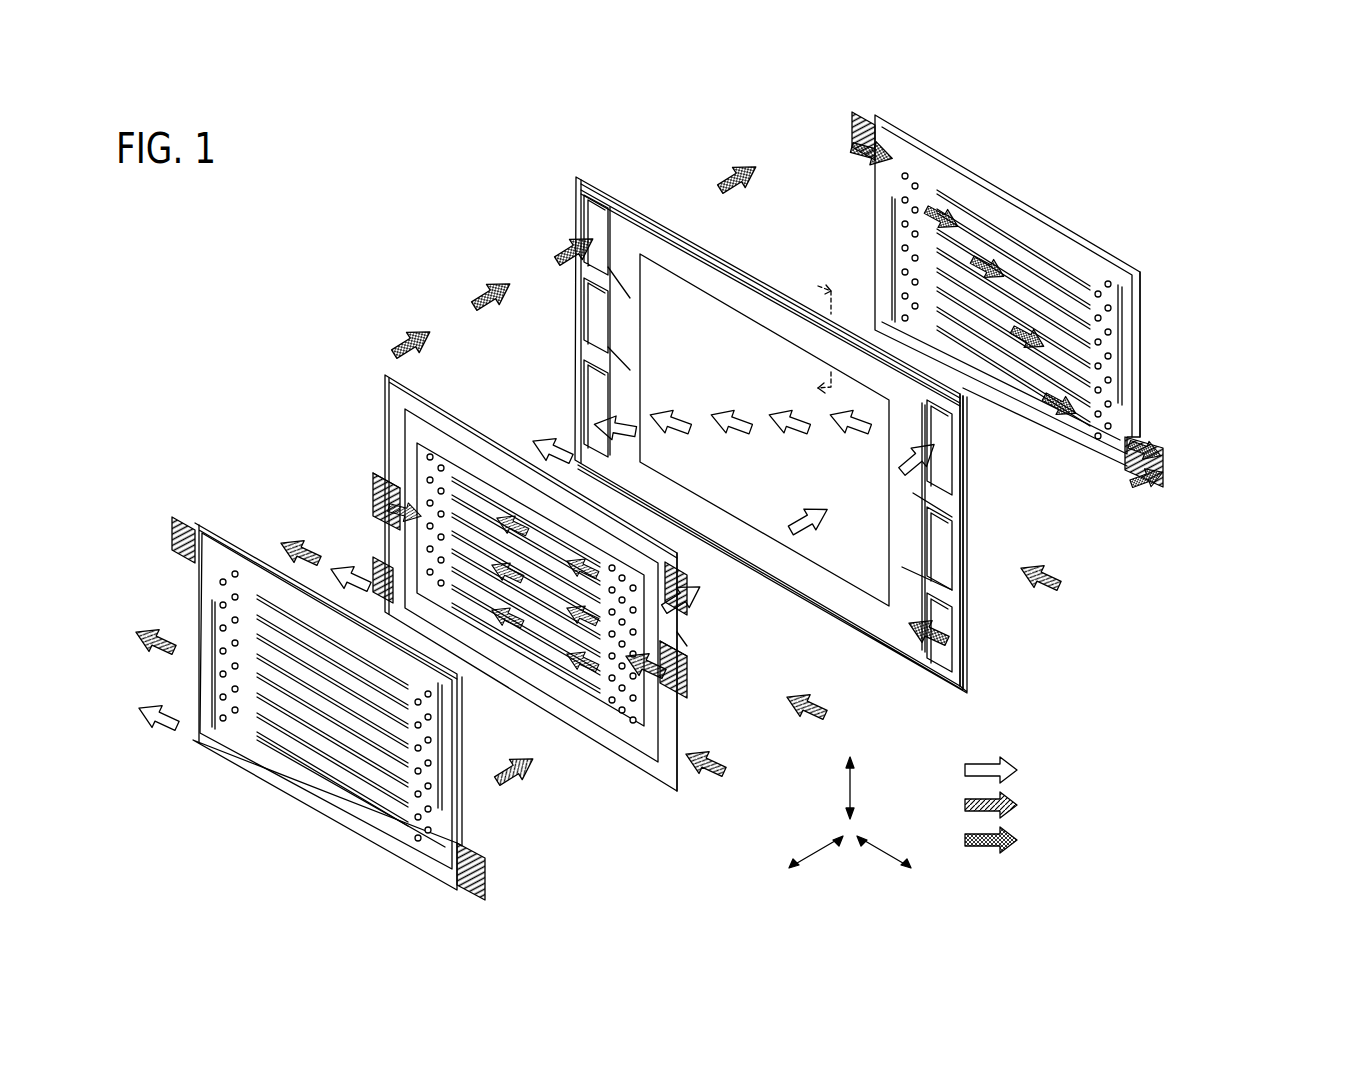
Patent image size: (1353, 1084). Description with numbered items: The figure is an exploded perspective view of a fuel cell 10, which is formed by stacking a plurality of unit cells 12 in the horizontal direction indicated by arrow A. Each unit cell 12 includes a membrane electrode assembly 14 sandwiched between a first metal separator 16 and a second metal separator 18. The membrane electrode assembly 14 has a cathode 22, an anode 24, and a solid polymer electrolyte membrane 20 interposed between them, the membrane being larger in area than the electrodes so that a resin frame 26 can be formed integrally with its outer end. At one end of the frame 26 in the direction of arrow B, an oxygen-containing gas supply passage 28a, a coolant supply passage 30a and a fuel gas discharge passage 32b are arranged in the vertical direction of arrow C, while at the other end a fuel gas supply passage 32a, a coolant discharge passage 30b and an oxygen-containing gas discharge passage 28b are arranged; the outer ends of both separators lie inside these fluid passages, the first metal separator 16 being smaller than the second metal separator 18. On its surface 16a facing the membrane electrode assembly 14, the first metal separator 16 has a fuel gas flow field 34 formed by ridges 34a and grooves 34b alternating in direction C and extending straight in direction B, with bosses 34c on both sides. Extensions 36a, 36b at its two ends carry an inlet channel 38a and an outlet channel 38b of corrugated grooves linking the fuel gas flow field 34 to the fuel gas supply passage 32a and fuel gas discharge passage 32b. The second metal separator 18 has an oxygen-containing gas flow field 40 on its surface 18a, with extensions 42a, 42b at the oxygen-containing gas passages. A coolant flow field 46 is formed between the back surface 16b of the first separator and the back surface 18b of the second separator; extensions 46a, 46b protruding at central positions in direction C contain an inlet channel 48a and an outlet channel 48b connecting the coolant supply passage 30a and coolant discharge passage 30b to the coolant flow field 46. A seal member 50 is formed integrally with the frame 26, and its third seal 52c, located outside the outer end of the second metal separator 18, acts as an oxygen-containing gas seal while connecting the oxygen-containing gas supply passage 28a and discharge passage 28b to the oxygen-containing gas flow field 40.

The fuel cell 10 is at (707, 506).
The unit cell 12 is at (192, 291).
The membrane electrode assembly 14 is at (768, 407).
The first metal separator 16 is at (188, 520).
The surface of first metal separator 16a is at (1100, 456).
The surface of first metal separator 16b is at (1131, 476).
The second metal separator 18 is at (525, 575).
The surface of second metal separator 18a is at (658, 775).
The surface of second metal separator 18b is at (640, 770).
The solid polymer electrolyte membrane 20 is at (968, 521).
The cathode 22 is at (764, 436).
The anode 24 is at (752, 328).
The resin frame 26 is at (982, 484).
The oxygen-containing gas supply passage 28a is at (950, 440).
The oxygen-containing gas discharge passage 28b is at (598, 378).
The coolant supply passage 30a is at (950, 540).
The coolant discharge passage 30b is at (596, 302).
The fuel gas supply passage 32a is at (592, 216).
The fuel gas discharge passage 32b is at (950, 622).
The fuel gas flow field 34 is at (1005, 272).
The ridges 34a is at (1025, 240).
The grooves 34b is at (1013, 290).
The bosses 34c is at (895, 256).
The extension 36a is at (865, 160).
The extension 36b is at (1152, 447).
The inlet channel 38a is at (858, 136).
The outlet channel 38b is at (1158, 470).
The oxygen-containing gas flow field 40 is at (530, 580).
The extension 42a is at (686, 582).
The extension 42b is at (376, 556).
The coolant flow field 46 is at (547, 620).
The extension 46a is at (686, 651).
The extension 46b is at (378, 478).
The inlet channel 48a is at (700, 680).
The outlet channel 48b is at (375, 497).
The seal member 50 is at (771, 435).
The third seal 52c is at (690, 257).